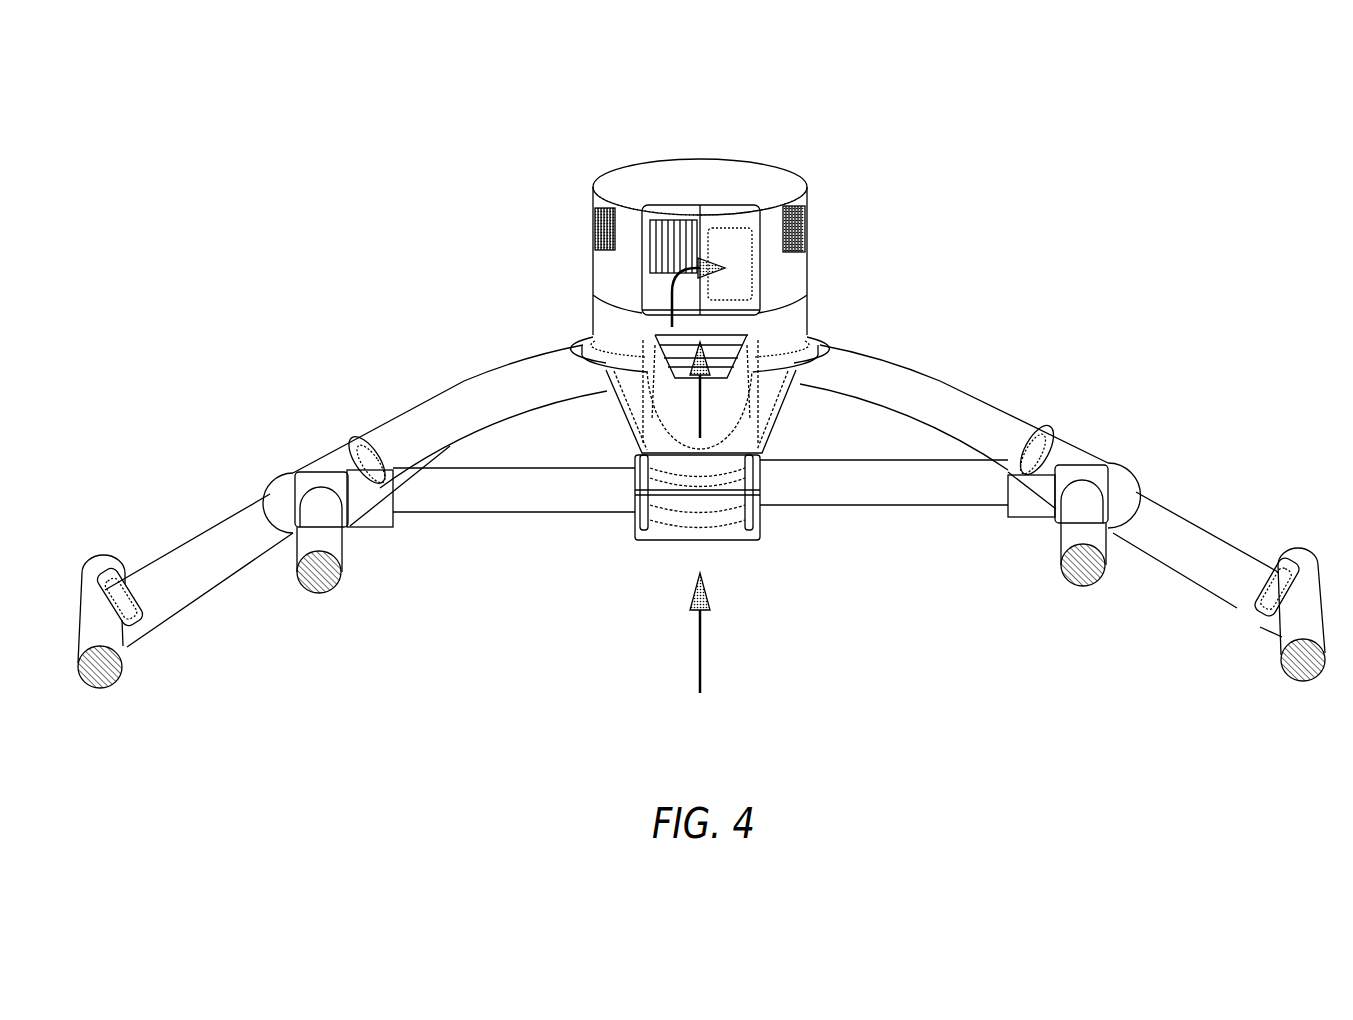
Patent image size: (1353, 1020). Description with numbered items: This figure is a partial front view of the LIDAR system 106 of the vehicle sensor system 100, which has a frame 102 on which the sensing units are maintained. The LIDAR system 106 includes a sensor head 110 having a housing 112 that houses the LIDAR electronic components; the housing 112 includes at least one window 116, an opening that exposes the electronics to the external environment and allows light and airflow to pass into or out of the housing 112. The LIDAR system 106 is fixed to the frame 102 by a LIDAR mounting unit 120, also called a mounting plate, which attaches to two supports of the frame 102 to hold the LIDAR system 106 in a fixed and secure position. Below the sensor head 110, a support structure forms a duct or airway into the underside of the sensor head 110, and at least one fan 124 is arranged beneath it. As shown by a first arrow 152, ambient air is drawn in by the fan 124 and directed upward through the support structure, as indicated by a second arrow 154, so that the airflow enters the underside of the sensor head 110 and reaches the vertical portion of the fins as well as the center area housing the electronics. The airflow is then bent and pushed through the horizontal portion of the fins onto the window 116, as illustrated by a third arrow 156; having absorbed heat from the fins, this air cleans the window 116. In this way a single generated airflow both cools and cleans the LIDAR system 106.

The vehicle sensor system 100 is at (283, 153).
The frame 102 is at (953, 400).
The LIDAR system 106 is at (635, 165).
The sensor head 110 is at (770, 177).
The housing 112 is at (807, 268).
The window 116 is at (742, 252).
The LIDAR mounting unit 120 is at (583, 347).
The fan 124 is at (594, 238).
The first arrow 152 is at (703, 635).
The second arrow 154 is at (700, 405).
The third arrow 156 is at (640, 292).